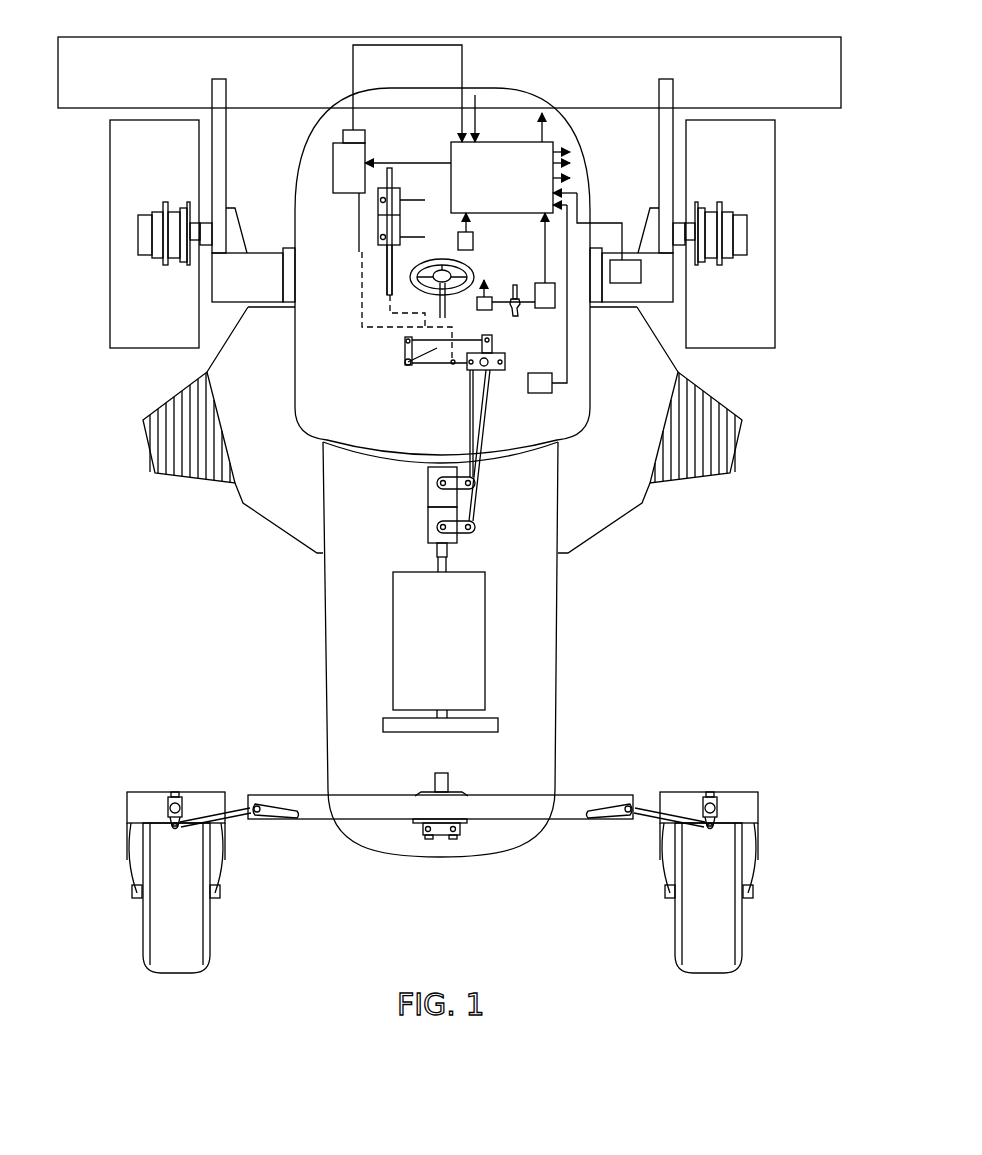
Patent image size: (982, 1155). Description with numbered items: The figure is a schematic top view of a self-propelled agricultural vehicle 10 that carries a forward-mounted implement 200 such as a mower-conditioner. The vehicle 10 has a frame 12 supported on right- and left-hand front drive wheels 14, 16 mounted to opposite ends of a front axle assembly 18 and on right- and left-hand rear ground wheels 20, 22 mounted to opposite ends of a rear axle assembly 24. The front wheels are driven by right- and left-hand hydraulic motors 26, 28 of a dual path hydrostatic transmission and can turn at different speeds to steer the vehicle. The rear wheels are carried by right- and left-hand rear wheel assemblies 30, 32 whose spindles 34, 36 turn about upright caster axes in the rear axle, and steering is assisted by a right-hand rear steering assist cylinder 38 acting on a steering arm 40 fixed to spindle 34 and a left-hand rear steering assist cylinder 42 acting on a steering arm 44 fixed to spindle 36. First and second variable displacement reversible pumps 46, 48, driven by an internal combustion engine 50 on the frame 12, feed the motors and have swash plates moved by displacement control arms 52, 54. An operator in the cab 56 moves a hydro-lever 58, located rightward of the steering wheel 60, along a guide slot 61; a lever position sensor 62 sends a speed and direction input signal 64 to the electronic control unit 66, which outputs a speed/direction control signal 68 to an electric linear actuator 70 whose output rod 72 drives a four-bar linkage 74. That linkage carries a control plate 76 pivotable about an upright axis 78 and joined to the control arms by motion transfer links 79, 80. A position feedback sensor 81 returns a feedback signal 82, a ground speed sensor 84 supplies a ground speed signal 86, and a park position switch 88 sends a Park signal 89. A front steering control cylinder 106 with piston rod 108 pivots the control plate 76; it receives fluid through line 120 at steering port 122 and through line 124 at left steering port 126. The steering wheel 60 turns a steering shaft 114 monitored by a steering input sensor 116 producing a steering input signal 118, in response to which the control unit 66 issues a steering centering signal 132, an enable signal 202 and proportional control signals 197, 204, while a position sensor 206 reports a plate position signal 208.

The self-propelled agricultural vehicle 10 is at (568, 639).
The frame 12 is at (558, 578).
The right-hand front drive wheel 14 is at (760, 296).
The left-hand front drive wheel 16 is at (133, 296).
The front axle assembly 18 is at (257, 272).
The right-hand rear ground wheel 20 is at (708, 975).
The left-hand rear ground wheel 22 is at (178, 975).
The rear axle assembly 24 is at (497, 805).
The right-hand hydraulic motor 26 is at (740, 222).
The left-hand hydraulic motor 28 is at (150, 222).
The right-hand rear wheel assembly 30 is at (743, 777).
The left-hand rear wheel assembly 32 is at (178, 735).
The spindle 34 is at (710, 797).
The spindle 36 is at (172, 797).
The right-hand rear steering assist cylinder 38 is at (645, 818).
The steering arm 40 is at (725, 820).
The left-hand rear steering assist cylinder 42 is at (190, 820).
The steering arm 44 is at (177, 830).
The first variable displacement reversible pump 46 is at (428, 520).
The second variable displacement reversible pump 48 is at (428, 478).
The internal combustion engine 50 is at (468, 648).
The displacement control arm 52 is at (472, 533).
The displacement control arm 54 is at (476, 486).
The cab 56 is at (487, 123).
The hydro-lever 58 is at (517, 292).
The steering wheel 60 is at (470, 262).
The guide slot 61 is at (560, 340).
The lever position sensor 62 is at (522, 318).
The speed and direction input signal 64 is at (548, 250).
The electronic control unit 66 is at (451, 142).
The speed/direction control signal 68 is at (420, 163).
The electric linear actuator 70 is at (333, 170).
The output rod 72 is at (353, 195).
The four-bar linkage 74 is at (450, 375).
The control plate 76 is at (493, 345).
The upright axis 78 is at (486, 366).
The motion transfer link 79 is at (481, 440).
The motion transfer link 80 is at (469, 418).
The position feedback sensor 81 is at (365, 136).
The feedback signal 82 is at (462, 52).
The ground speed sensor 84 is at (625, 283).
The ground speed signal 86 is at (598, 223).
The park position switch 88 is at (481, 311).
The Park signal 89 is at (477, 100).
The front steering control cylinder 106 is at (400, 190).
The piston rod 108 is at (380, 290).
The steering shaft 114 is at (405, 345).
The steering input sensor 116 is at (458, 240).
The steering input signal 118 is at (485, 222).
The line 120 is at (385, 270).
The steering port 122 is at (377, 237).
The line 124 is at (377, 220).
The left steering port 126 is at (380, 200).
The steering centering signal 132 is at (540, 125).
The proportional control signal 197 is at (557, 147).
The forward-mounted implement 200 is at (625, 117).
The enable signal 202 is at (570, 163).
The proportional electrical signal 204 is at (571, 178).
The position sensor 206 is at (540, 395).
The plate position signal 208 is at (568, 310).